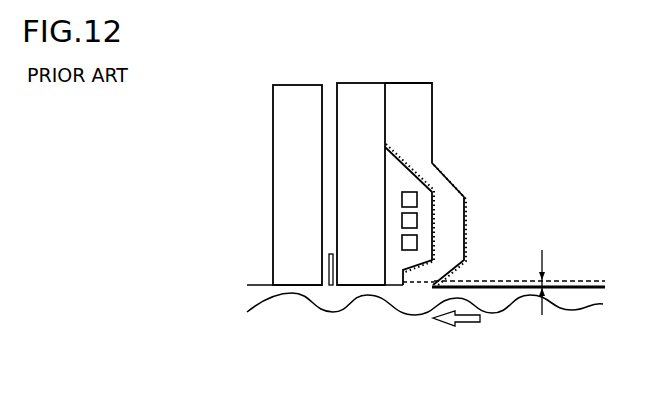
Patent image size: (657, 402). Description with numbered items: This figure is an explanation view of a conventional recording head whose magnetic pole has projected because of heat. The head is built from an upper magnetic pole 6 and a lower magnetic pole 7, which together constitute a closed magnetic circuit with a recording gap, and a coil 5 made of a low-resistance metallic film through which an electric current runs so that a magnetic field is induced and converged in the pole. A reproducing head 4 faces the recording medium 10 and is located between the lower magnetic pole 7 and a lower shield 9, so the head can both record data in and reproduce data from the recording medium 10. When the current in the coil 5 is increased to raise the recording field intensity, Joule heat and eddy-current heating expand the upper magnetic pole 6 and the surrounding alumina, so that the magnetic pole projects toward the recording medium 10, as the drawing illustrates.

The reproducing head 4 is at (331, 287).
The coil 5 is at (408, 222).
The upper magnetic pole 6 is at (407, 100).
The lower magnetic pole 7 is at (357, 100).
The lower shield 9 is at (290, 100).
The recording medium 10 is at (528, 328).